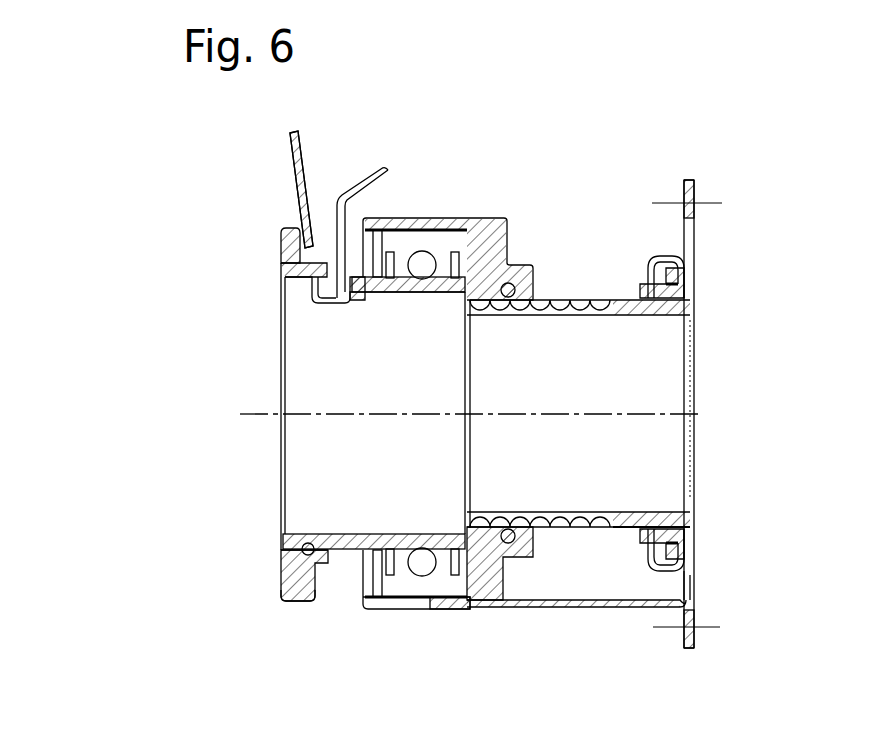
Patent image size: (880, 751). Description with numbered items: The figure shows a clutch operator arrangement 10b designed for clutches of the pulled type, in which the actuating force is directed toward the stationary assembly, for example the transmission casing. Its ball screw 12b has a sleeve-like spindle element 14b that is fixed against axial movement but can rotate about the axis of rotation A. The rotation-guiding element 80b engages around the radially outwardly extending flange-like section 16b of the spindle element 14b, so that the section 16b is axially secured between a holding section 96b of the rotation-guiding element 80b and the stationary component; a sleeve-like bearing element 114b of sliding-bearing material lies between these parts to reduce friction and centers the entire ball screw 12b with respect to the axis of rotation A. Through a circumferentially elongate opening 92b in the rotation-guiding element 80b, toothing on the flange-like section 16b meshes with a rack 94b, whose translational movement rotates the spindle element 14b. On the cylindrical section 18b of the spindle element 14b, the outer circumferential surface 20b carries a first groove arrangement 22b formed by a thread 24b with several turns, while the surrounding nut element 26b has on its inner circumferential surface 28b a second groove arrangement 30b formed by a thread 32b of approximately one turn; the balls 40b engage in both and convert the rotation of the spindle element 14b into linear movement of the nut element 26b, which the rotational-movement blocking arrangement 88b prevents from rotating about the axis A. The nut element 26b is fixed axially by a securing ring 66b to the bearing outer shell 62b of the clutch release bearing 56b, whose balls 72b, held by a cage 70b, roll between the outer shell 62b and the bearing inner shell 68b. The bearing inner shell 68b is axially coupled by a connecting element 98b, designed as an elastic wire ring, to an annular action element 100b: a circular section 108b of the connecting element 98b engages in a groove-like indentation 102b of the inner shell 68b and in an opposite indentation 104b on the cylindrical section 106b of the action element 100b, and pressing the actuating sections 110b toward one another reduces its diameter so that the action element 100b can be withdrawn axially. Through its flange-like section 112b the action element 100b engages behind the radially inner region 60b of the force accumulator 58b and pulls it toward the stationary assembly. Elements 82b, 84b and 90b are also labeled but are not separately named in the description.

The axis of rotation A is at (547, 413).
The clutch operator arrangement 10b is at (742, 134).
The ball screw 12b is at (624, 212).
The spindle element 14b is at (694, 328).
The flange-like section 16b is at (688, 292).
The cylindrical section 18b is at (625, 320).
The outer circumferential surface 20b is at (622, 533).
The first groove arrangement 22b is at (548, 534).
The thread 24b is at (602, 512).
The nut element 26b is at (491, 218).
The inner circumferential surface 28b is at (541, 305).
The second groove arrangement 30b is at (514, 283).
The thread 32b is at (511, 542).
The balls 40b is at (458, 582).
The clutch release bearing 56b is at (348, 614).
The force accumulator 58b is at (288, 134).
The radially inner region 60b is at (290, 236).
The bearing outer shell 62b is at (424, 238).
The securing ring 66b is at (362, 228).
The bearing inner shell 68b is at (377, 534).
The cage 70b is at (455, 250).
The balls 72b is at (421, 563).
The rotation-guiding element 80b is at (688, 578).
The plate 82b is at (688, 595).
The tube section 84b is at (690, 512).
The rotational-movement blocking arrangement 88b is at (553, 636).
The plate 90b is at (578, 603).
The opening 92b is at (658, 608).
The rack 94b is at (398, 609).
The holding section 96b is at (692, 542).
The connecting element 98b is at (318, 300).
The action element 100b is at (283, 572).
The groove-like indentation 102b is at (304, 543).
The indentation 104b is at (307, 595).
The cylindrical section 106b is at (281, 275).
The circular section 108b is at (298, 551).
The actuating sections 110b is at (384, 168).
The flange-like section 112b is at (283, 236).
The bearing element 114b is at (683, 255).